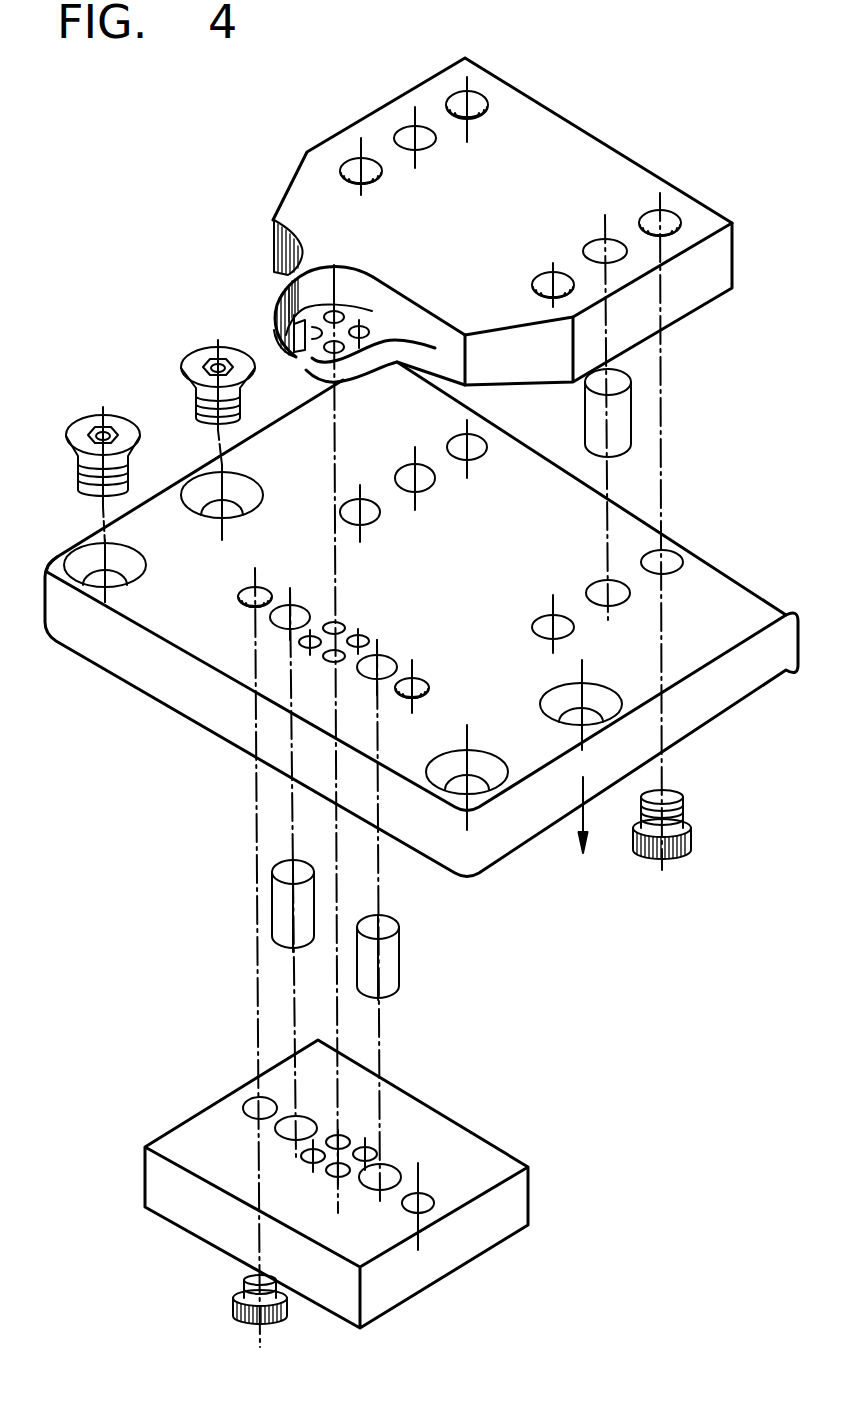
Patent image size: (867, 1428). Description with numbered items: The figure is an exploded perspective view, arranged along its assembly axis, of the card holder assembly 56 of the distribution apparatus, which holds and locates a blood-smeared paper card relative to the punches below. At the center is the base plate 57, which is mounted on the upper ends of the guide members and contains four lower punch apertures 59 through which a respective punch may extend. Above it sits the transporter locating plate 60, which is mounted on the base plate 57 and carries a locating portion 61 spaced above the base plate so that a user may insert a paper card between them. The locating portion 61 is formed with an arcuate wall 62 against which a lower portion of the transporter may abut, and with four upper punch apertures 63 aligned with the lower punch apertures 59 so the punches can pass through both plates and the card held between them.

The card holder assembly 56 is at (131, 257).
The base plate 57 is at (528, 822).
The lower punch apertures 59 is at (366, 640).
The transporter locating plate 60 is at (560, 142).
The locating portion 61 is at (283, 279).
The arcuate wall 62 is at (329, 305).
The upper punch apertures 63 is at (362, 333).